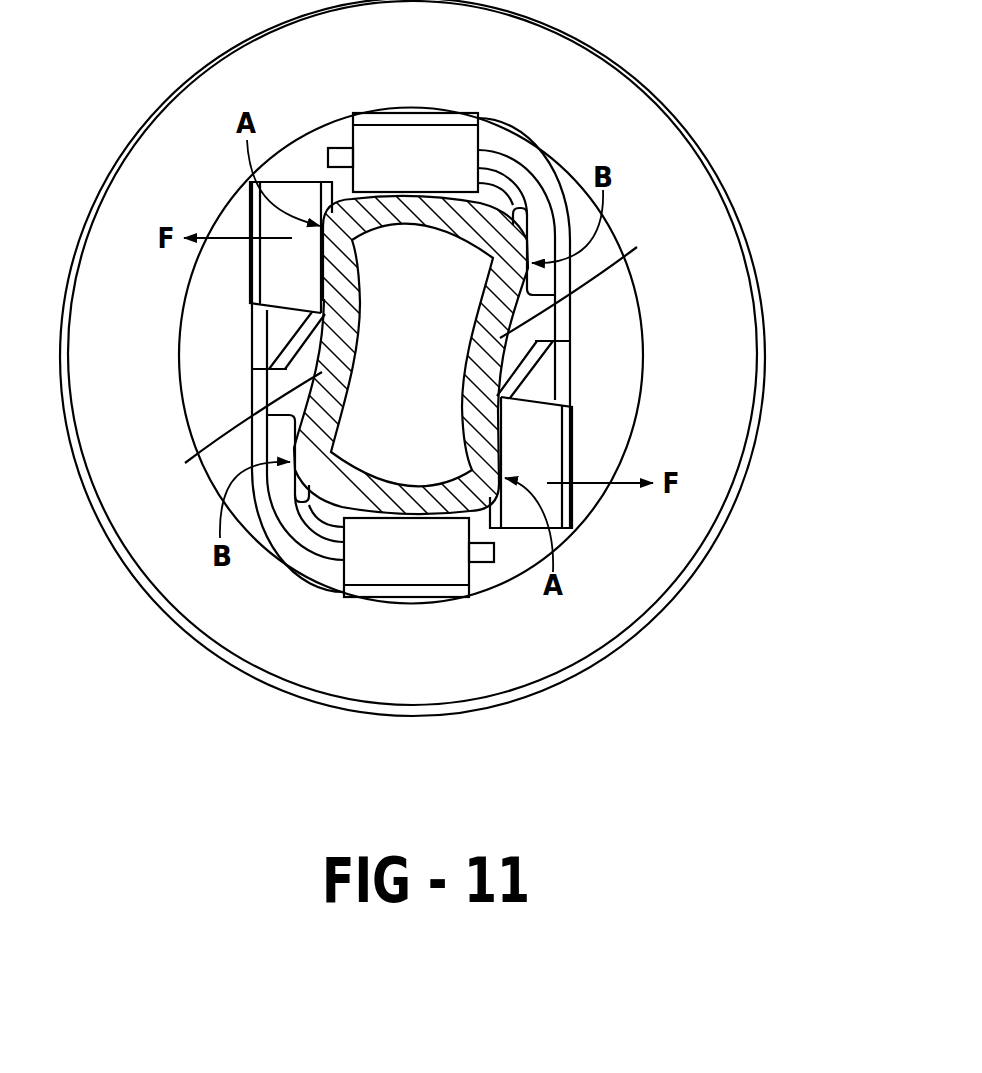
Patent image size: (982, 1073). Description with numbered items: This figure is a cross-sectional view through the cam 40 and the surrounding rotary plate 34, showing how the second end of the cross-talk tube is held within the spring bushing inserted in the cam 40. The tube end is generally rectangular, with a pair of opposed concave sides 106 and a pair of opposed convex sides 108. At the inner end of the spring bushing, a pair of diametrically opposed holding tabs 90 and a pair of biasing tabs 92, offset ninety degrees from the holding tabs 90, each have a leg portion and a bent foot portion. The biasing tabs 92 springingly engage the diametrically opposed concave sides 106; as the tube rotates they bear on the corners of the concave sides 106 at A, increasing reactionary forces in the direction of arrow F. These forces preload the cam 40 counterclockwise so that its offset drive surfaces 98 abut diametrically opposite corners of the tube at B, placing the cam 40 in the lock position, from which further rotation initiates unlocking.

The rotary plate 34 is at (740, 328).
The cam 40 is at (612, 437).
The holding tabs 90 is at (423, 147).
The biasing tabs 92 is at (542, 382).
The drive surfaces 98 is at (513, 210).
The concave sides 106 is at (637, 244).
The convex sides 108 is at (510, 200).